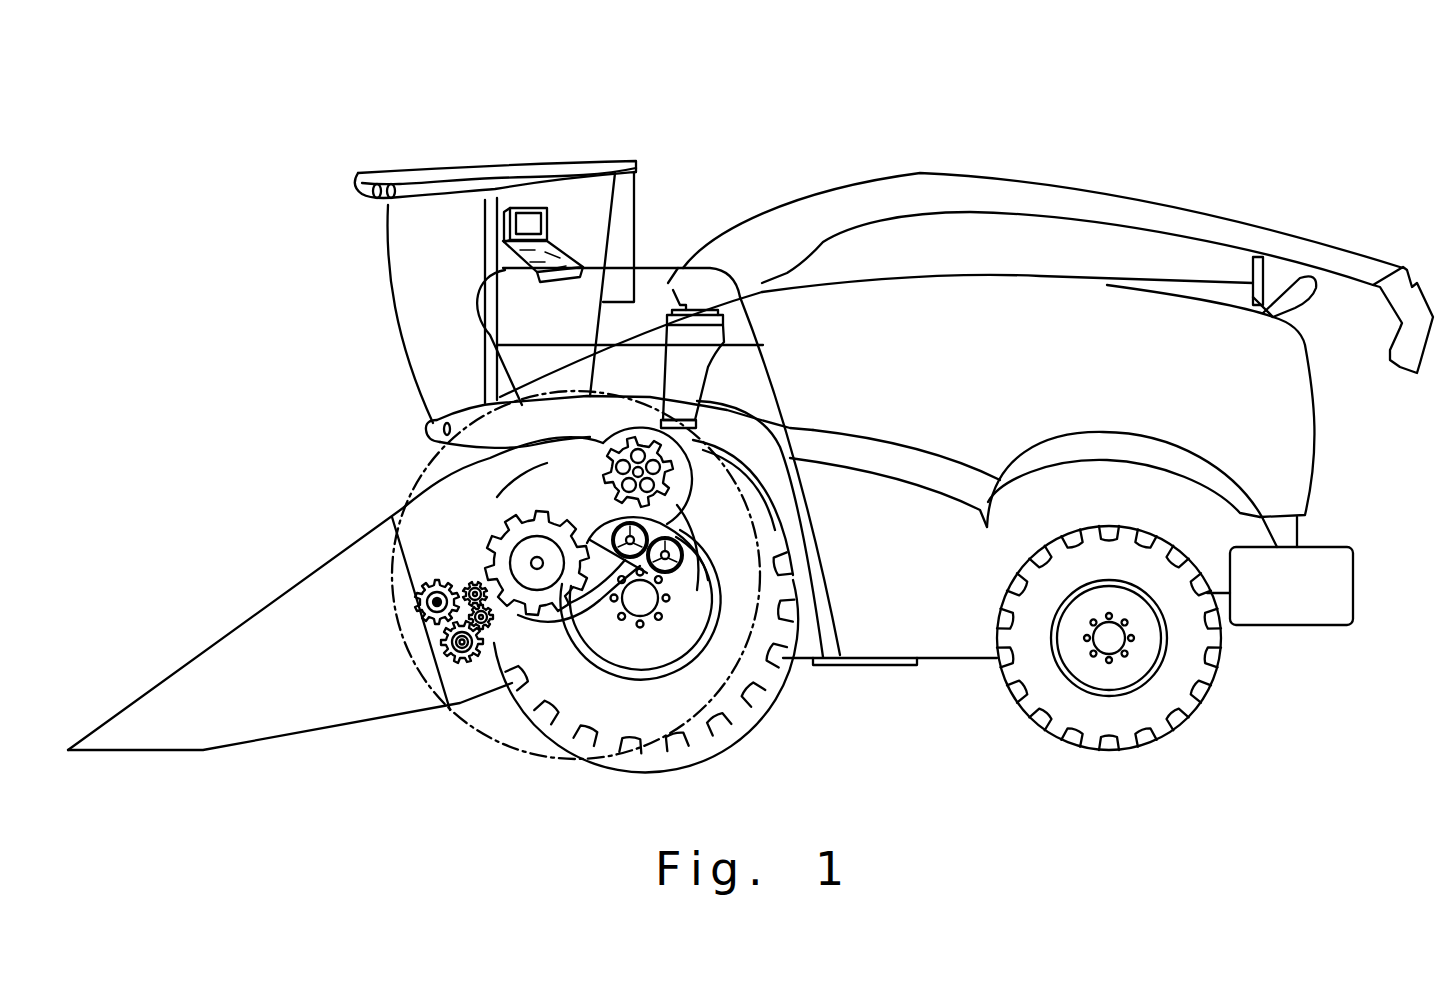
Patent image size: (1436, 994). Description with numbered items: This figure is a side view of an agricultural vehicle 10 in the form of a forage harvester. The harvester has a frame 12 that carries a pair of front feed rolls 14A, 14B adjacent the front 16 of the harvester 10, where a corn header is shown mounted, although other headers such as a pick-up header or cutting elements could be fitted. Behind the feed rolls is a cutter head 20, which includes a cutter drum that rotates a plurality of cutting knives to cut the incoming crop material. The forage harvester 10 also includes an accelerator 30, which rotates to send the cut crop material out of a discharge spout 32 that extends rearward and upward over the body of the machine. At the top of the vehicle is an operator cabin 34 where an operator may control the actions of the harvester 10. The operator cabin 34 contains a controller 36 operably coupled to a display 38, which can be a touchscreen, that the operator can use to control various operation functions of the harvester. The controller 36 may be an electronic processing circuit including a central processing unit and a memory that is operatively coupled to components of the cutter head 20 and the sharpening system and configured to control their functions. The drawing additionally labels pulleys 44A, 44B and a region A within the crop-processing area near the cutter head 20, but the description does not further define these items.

The agricultural vehicle 10 is at (326, 292).
The frame 12 is at (792, 498).
The front feed roll 14A is at (424, 605).
The front feed roll 14B is at (452, 648).
The front 16 is at (435, 733).
The cutter head 20 is at (562, 628).
The accelerator 30 is at (625, 445).
The discharge spout 32 is at (905, 172).
The operator cabin 34 is at (448, 155).
The controller 36 is at (522, 252).
The display 38 is at (527, 212).
The pulley 44A is at (617, 540).
The pulley 44B is at (685, 560).
The crop processing region A is at (410, 480).